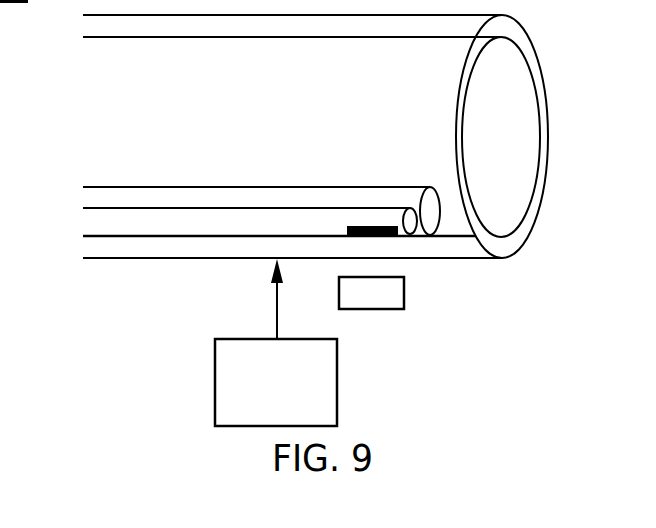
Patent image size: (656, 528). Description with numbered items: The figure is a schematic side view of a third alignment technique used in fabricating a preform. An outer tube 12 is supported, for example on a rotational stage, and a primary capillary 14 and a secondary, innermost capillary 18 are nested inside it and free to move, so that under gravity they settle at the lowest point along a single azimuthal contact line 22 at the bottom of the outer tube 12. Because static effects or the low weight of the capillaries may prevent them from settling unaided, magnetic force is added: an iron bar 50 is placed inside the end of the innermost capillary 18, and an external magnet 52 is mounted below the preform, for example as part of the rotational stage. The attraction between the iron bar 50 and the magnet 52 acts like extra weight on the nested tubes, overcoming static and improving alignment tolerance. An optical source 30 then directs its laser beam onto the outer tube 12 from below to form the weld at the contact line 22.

The outer tube 12 is at (520, 235).
The primary capillary 14 is at (337, 187).
The secondary capillary 18 is at (247, 208).
The azimuthal contact line 22 is at (180, 237).
The optical source 30 is at (293, 395).
The iron bar 50 is at (373, 227).
The external magnet 52 is at (373, 310).